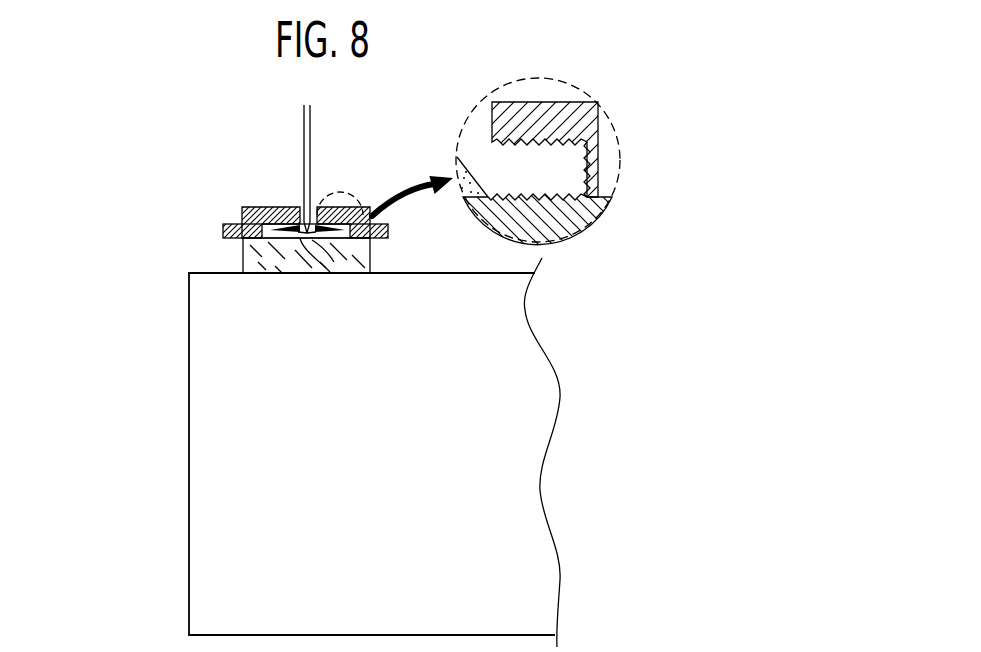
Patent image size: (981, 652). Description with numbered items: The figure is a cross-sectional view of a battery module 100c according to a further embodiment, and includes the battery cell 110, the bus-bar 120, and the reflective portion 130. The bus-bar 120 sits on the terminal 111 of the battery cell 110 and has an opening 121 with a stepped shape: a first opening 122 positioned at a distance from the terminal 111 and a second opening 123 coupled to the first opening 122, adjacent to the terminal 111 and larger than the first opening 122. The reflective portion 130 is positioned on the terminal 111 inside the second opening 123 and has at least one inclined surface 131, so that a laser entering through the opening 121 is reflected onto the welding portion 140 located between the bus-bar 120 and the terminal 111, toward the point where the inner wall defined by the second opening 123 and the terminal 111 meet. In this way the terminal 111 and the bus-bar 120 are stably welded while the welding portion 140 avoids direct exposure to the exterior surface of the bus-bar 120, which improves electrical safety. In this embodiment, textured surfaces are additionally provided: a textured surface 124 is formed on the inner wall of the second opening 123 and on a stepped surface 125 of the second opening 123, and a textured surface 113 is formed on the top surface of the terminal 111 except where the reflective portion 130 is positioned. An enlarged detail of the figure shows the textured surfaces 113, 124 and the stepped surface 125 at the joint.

The battery module 100c is at (105, 131).
The battery cell 110 is at (172, 409).
The terminal 111 is at (243, 256).
The textured surface 113 is at (555, 198).
The bus-bar 120 is at (373, 186).
The opening 121 is at (268, 117).
The first opening 122 is at (302, 206).
The second opening 123 is at (265, 206).
The textured surface 124 is at (592, 157).
The stepped surface 125 is at (528, 148).
The reflective portion 130 is at (307, 241).
The inclined surface 131 is at (327, 252).
The welding portion 140 is at (222, 234).